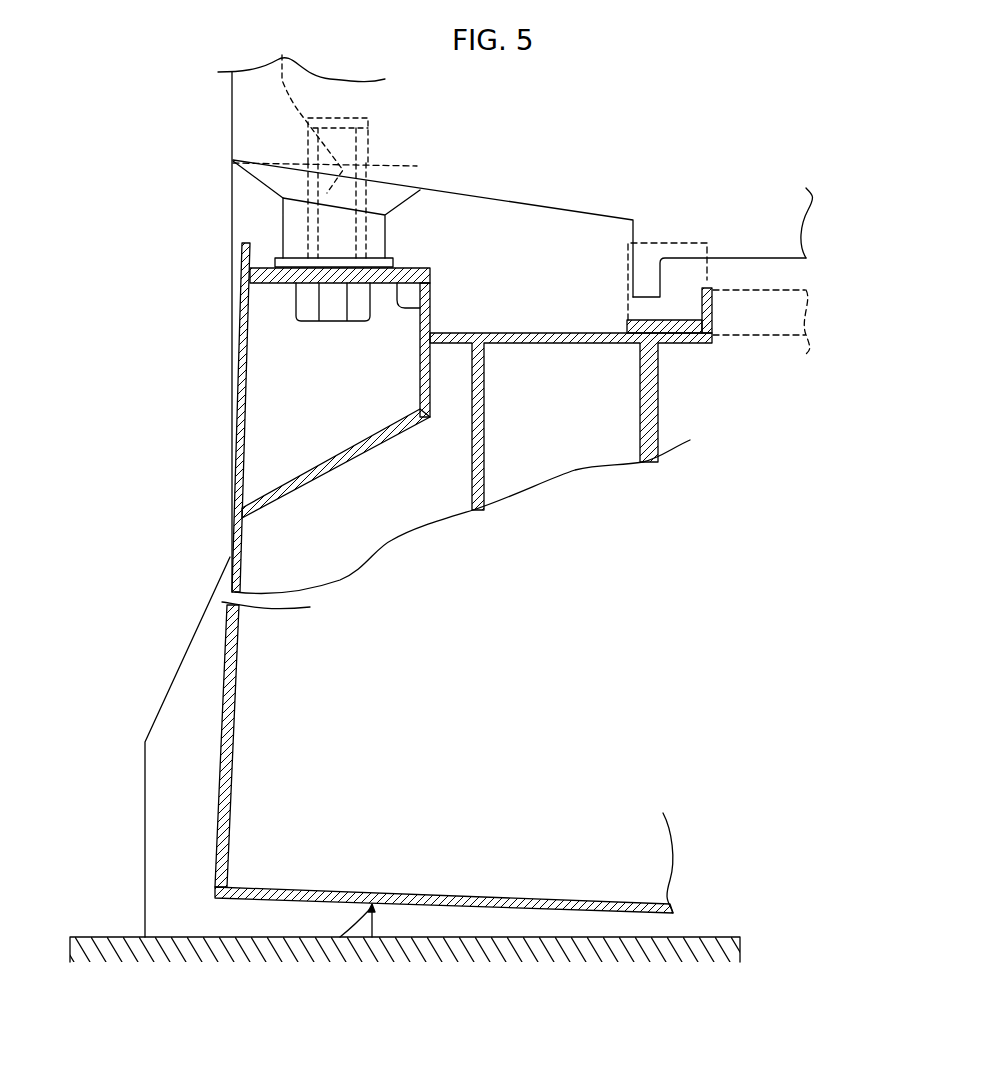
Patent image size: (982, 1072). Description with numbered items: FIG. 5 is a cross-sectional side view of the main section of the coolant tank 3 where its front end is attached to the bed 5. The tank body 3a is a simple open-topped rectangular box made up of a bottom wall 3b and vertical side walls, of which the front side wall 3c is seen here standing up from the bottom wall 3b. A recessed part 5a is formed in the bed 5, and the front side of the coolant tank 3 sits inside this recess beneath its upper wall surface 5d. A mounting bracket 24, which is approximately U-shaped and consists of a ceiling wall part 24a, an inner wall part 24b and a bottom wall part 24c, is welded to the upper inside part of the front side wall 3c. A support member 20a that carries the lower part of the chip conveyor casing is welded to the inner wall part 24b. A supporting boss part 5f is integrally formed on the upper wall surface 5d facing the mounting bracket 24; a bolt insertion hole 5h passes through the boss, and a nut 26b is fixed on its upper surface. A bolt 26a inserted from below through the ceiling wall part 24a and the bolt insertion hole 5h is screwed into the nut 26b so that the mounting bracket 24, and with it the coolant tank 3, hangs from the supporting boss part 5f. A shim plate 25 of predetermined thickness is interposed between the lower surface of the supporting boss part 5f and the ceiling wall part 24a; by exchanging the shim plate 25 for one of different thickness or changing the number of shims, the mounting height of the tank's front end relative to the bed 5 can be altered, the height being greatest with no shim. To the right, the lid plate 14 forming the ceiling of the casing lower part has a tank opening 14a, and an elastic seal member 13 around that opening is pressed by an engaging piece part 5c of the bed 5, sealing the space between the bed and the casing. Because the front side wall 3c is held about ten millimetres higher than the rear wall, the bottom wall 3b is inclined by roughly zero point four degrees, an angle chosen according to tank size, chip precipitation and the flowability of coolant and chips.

The coolant tank 3 is at (359, 634).
The tank body 3a is at (212, 421).
The bottom wall 3b is at (510, 905).
The front side wall 3c is at (223, 720).
The bed 5 is at (224, 232).
The recessed part 5a is at (234, 222).
The engaging piece part 5c is at (682, 312).
The upper wall surface 5d is at (555, 226).
The supporting boss part 5f is at (276, 194).
The bolt insertion hole 5h is at (308, 110).
The seal member 13 is at (713, 243).
The lid plate 14 is at (672, 262).
The tank opening 14a is at (713, 315).
The support member 20a is at (472, 478).
The mounting bracket 24 is at (384, 346).
The ceiling wall part 24a is at (420, 269).
The inner wall part 24b is at (432, 400).
The bottom wall part 24c is at (325, 480).
The shim plate 25 is at (417, 258).
The bolt 26a is at (332, 323).
The nut 26b is at (360, 118).